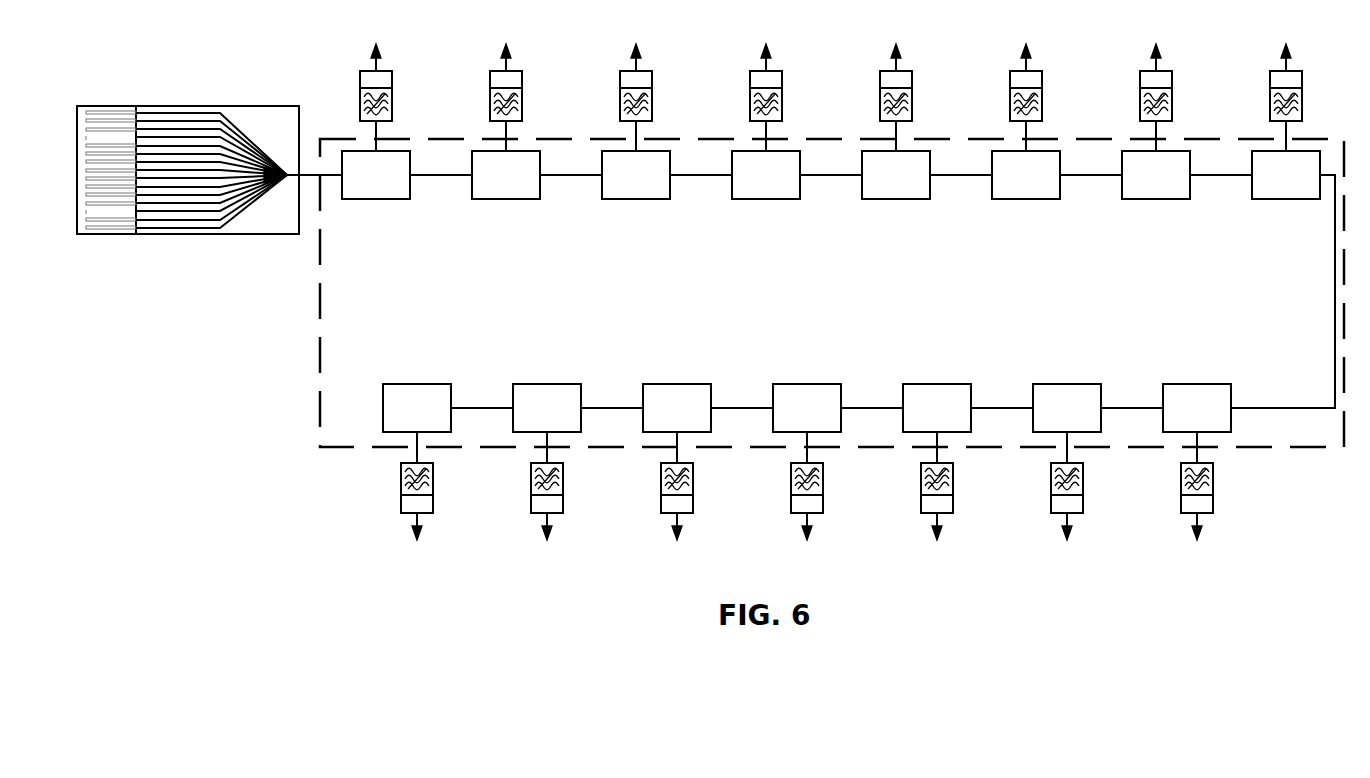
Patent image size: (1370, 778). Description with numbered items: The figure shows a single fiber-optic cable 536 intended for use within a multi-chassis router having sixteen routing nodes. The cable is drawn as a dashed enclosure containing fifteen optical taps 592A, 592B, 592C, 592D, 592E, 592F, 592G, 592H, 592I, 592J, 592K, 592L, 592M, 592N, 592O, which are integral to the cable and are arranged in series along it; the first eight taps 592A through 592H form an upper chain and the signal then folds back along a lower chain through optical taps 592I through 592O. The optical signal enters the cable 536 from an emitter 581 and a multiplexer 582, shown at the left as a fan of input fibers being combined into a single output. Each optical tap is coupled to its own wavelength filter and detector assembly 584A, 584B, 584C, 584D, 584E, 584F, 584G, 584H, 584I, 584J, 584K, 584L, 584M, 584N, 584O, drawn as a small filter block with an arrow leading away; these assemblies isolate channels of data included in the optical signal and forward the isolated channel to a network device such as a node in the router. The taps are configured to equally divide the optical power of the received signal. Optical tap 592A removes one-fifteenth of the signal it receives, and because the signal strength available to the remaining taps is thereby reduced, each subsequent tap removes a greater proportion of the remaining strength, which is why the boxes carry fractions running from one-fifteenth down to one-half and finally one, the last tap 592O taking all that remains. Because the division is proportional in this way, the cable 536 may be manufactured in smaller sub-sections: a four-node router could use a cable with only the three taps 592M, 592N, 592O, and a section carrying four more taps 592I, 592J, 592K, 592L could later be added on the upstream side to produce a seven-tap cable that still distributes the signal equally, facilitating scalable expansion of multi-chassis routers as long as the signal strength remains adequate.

The emitter 581 is at (107, 106).
The multiplexer 582 is at (210, 106).
The fiber-optic cable 536 is at (319, 378).
The wavelength filter and detector assembly 584A is at (360, 104).
The wavelength filter and detector assembly 584B is at (490, 104).
The wavelength filter and detector assembly 584C is at (620, 104).
The wavelength filter and detector assembly 584D is at (750, 104).
The wavelength filter and detector assembly 584E is at (880, 104).
The wavelength filter and detector assembly 584F is at (1010, 104).
The wavelength filter and detector assembly 584G is at (1140, 104).
The wavelength filter and detector assembly 584H is at (1270, 104).
The wavelength filter and detector assembly 584I is at (1181, 479).
The wavelength filter and detector assembly 584J is at (1051, 479).
The wavelength filter and detector assembly 584K is at (921, 479).
The wavelength filter and detector assembly 584L is at (791, 479).
The wavelength filter and detector assembly 584M is at (661, 479).
The wavelength filter and detector assembly 584N is at (531, 479).
The wavelength filter and detector assembly 584O is at (401, 479).
The optical tap 592A is at (360, 199).
The optical tap 592B is at (490, 199).
The optical tap 592C is at (620, 199).
The optical tap 592D is at (750, 199).
The optical tap 592E is at (880, 199).
The optical tap 592F is at (1010, 199).
The optical tap 592G is at (1140, 199).
The optical tap 592H is at (1270, 199).
The optical tap 592I is at (1181, 384).
The optical tap 592J is at (1051, 384).
The optical tap 592K is at (921, 384).
The optical tap 592L is at (791, 384).
The optical tap 592M is at (661, 384).
The optical tap 592N is at (531, 384).
The optical tap 592O is at (401, 384).